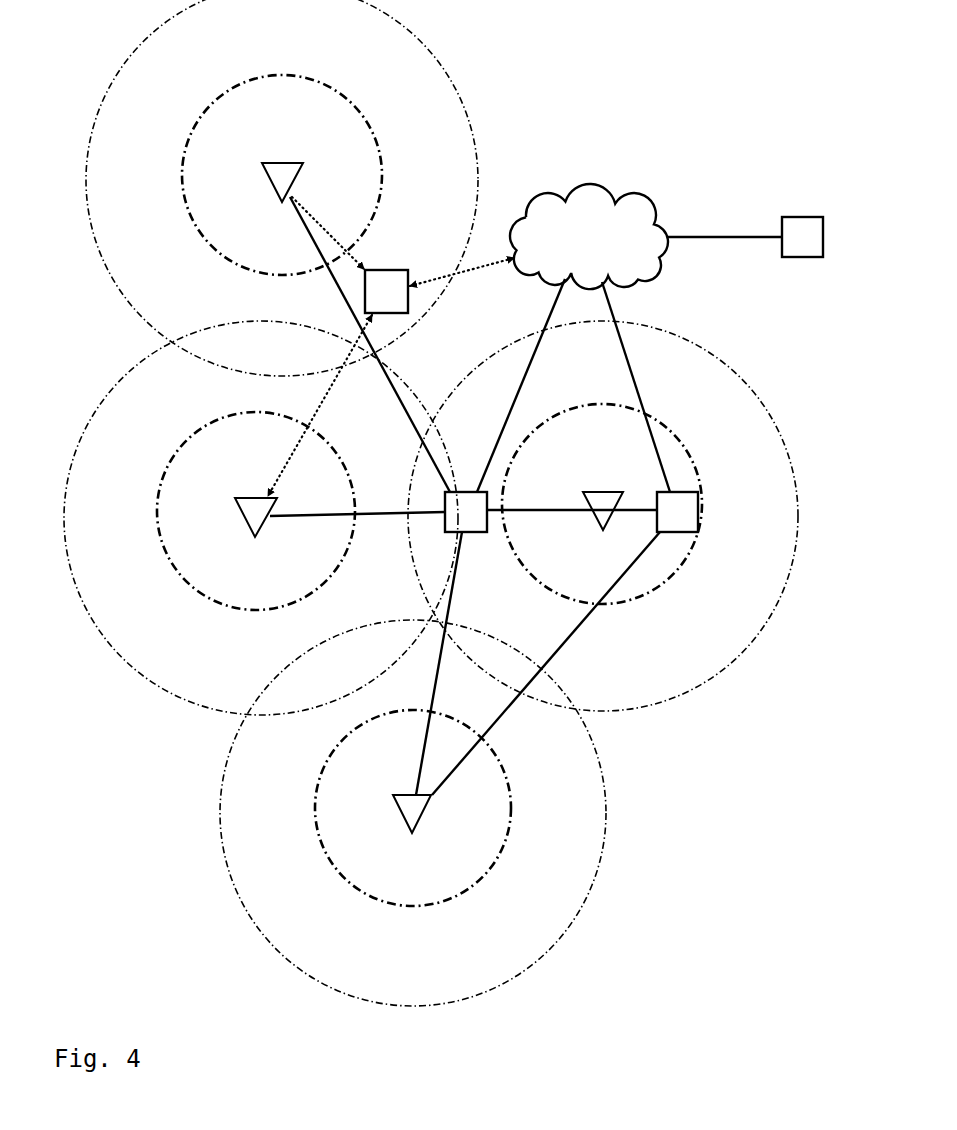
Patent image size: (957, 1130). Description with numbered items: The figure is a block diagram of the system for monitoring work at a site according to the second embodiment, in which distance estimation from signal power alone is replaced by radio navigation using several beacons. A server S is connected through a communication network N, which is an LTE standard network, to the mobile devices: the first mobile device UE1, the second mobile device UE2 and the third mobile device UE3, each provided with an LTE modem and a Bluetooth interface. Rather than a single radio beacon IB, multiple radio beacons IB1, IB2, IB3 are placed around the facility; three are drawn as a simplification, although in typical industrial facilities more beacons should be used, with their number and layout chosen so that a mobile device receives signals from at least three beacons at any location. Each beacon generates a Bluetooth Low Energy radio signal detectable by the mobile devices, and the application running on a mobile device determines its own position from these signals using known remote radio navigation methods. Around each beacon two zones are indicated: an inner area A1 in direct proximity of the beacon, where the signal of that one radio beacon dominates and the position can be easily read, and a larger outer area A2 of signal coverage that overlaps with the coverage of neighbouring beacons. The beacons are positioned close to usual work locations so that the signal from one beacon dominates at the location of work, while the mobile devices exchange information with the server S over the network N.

The first area (inner coverage area) A1 is at (207, 238).
The second area (outer coverage area) A2 is at (472, 137).
The radio beacon IB is at (235, 498).
The radio beacon IB1 is at (597, 492).
The radio beacon IB2 is at (262, 163).
The radio beacon IB3 is at (393, 795).
The first mobile device UE1 is at (673, 525).
The second mobile device UE2 is at (470, 528).
The third mobile device UE3 is at (397, 279).
The communication network N is at (640, 193).
The server S is at (823, 220).